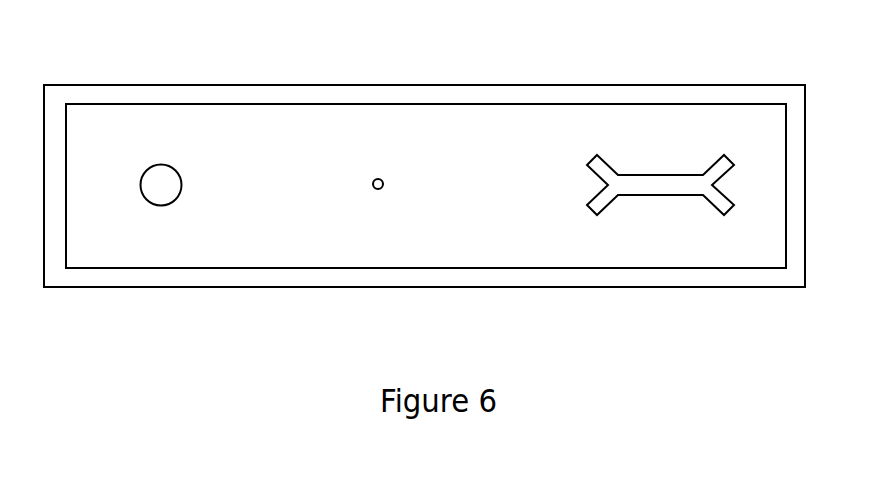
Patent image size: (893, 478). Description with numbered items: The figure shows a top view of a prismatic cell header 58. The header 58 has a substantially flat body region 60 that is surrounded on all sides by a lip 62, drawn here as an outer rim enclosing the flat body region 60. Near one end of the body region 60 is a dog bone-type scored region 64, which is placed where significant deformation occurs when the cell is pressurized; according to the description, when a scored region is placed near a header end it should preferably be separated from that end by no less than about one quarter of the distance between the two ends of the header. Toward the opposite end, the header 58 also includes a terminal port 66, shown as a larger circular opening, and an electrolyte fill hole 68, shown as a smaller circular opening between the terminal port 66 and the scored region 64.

The prismatic cell header 58 is at (332, 260).
The flat body region 60 is at (294, 120).
The lip 62 is at (647, 93).
The dog bone-type scored region 64 is at (662, 183).
The terminal port 66 is at (160, 177).
The electrolyte fill hole 68 is at (379, 179).